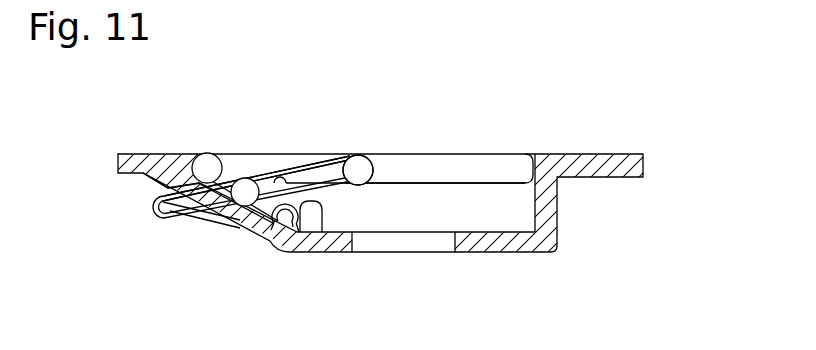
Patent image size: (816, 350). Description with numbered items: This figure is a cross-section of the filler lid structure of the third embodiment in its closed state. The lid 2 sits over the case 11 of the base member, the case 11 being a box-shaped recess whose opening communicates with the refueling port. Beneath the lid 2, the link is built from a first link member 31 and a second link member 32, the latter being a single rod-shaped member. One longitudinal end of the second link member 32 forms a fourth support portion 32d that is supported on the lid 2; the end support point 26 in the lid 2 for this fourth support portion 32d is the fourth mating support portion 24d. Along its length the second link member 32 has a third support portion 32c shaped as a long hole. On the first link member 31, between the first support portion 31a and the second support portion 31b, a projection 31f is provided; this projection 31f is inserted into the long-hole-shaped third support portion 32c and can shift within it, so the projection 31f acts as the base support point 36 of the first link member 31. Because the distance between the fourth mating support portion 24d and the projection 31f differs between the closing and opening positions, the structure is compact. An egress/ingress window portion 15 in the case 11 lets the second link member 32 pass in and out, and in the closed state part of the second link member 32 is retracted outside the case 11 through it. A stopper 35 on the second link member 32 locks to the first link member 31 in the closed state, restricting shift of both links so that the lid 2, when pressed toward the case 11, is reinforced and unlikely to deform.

The lid 2 is at (483, 163).
The case 11 is at (517, 251).
The egress/ingress window portion 15 is at (166, 187).
The fourth mating support portion 24d is at (368, 158).
The end support point 26 is at (366, 184).
The first link member 31 is at (248, 233).
The first support portion 31a is at (268, 231).
The second support portion 31b is at (210, 152).
The projection 31f is at (197, 229).
The second link member 32 is at (241, 198).
The third support portion 32c is at (285, 169).
The fourth support portion 32d is at (360, 155).
The stopper 35 is at (313, 207).
The base support point 36 is at (246, 177).